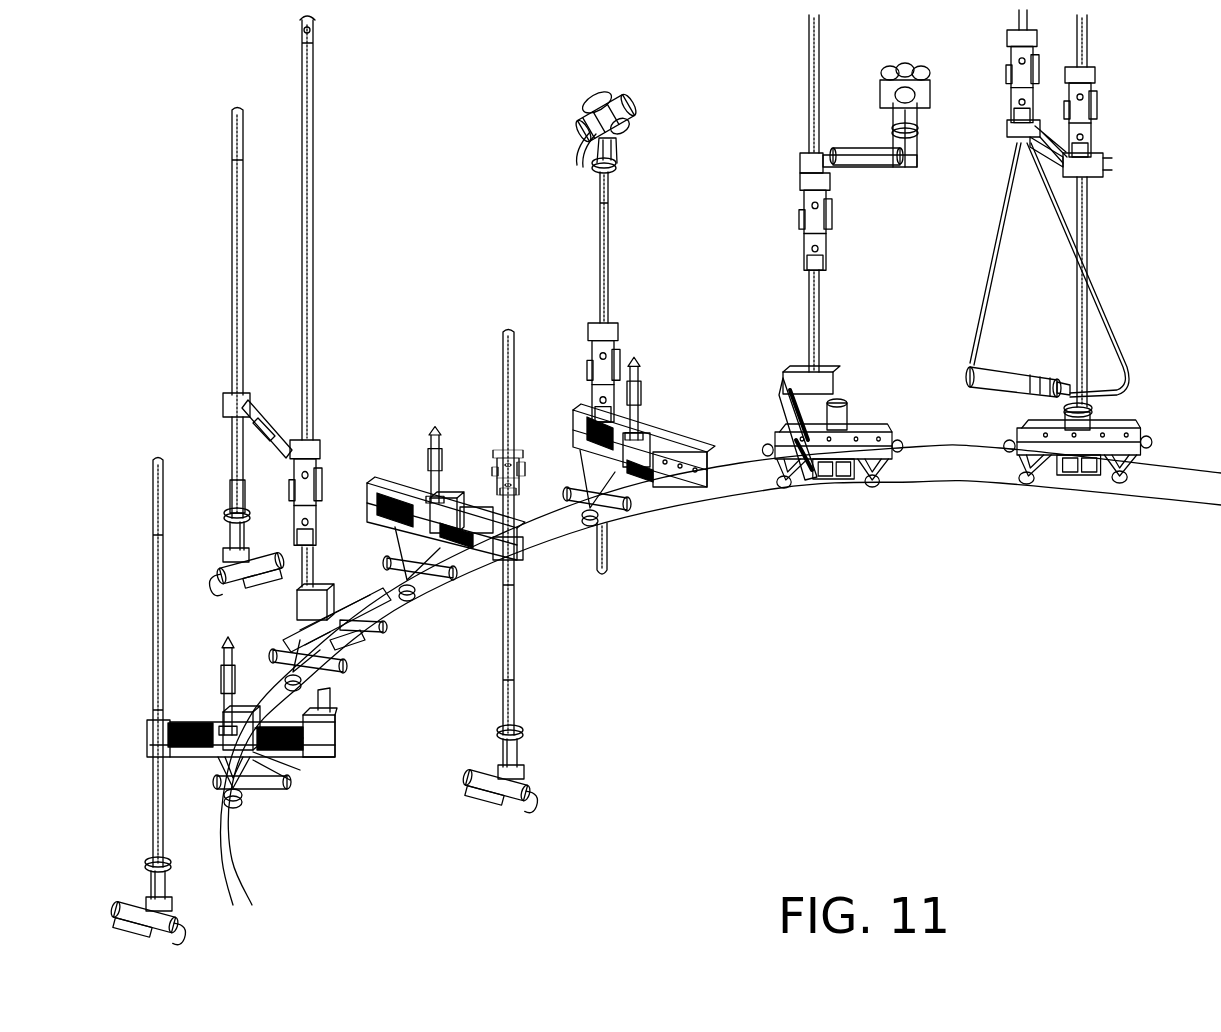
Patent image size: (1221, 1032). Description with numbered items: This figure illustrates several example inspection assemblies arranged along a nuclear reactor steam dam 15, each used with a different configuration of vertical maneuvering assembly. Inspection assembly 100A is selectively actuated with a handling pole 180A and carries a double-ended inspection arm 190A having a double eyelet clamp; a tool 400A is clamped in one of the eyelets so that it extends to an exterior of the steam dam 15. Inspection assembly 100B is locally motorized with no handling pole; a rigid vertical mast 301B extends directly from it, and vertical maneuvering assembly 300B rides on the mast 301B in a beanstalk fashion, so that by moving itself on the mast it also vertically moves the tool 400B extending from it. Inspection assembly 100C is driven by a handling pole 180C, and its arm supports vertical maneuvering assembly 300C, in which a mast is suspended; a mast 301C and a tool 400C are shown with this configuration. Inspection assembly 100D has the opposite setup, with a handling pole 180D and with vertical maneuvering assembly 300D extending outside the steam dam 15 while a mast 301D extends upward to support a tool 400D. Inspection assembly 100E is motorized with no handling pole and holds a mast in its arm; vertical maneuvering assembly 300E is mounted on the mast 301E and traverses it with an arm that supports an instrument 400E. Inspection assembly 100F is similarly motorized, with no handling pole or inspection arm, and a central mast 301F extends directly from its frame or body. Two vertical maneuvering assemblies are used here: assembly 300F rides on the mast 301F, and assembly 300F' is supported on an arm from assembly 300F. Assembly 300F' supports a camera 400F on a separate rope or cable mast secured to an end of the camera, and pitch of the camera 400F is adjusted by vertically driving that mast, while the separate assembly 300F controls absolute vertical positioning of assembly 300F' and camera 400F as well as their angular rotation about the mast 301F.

The steam dam 15 is at (1180, 487).
The inspection assembly 100A is at (237, 760).
The inspection assembly 100B is at (343, 630).
The inspection assembly 100C is at (428, 523).
The inspection assembly 100D is at (652, 507).
The inspection assembly 100E is at (843, 463).
The inspection assembly 100F is at (1077, 467).
The handling pole 180A is at (224, 690).
The handling pole 180C is at (428, 455).
The handling pole 180D is at (638, 415).
The double-ended inspection arm 190A is at (317, 748).
The vertical maneuvering assembly 300B is at (323, 510).
The vertical maneuvering assembly 300C is at (493, 467).
The vertical maneuvering assembly 300D is at (613, 364).
The vertical maneuvering assembly 300E is at (803, 237).
The vertical maneuvering assembly 300F is at (1114, 122).
The vertical maneuvering assembly 300F' is at (1003, 97).
The mast 301B is at (310, 236).
The mast 301C is at (512, 668).
The mast 301D is at (603, 263).
The mast 301E is at (812, 358).
The central mast 301F is at (1083, 258).
The tool 400A is at (130, 917).
The tool 400B is at (262, 572).
The tool 400C is at (513, 803).
The tool 400D is at (582, 108).
The instrument 400E is at (887, 90).
The camera 400F is at (1017, 387).